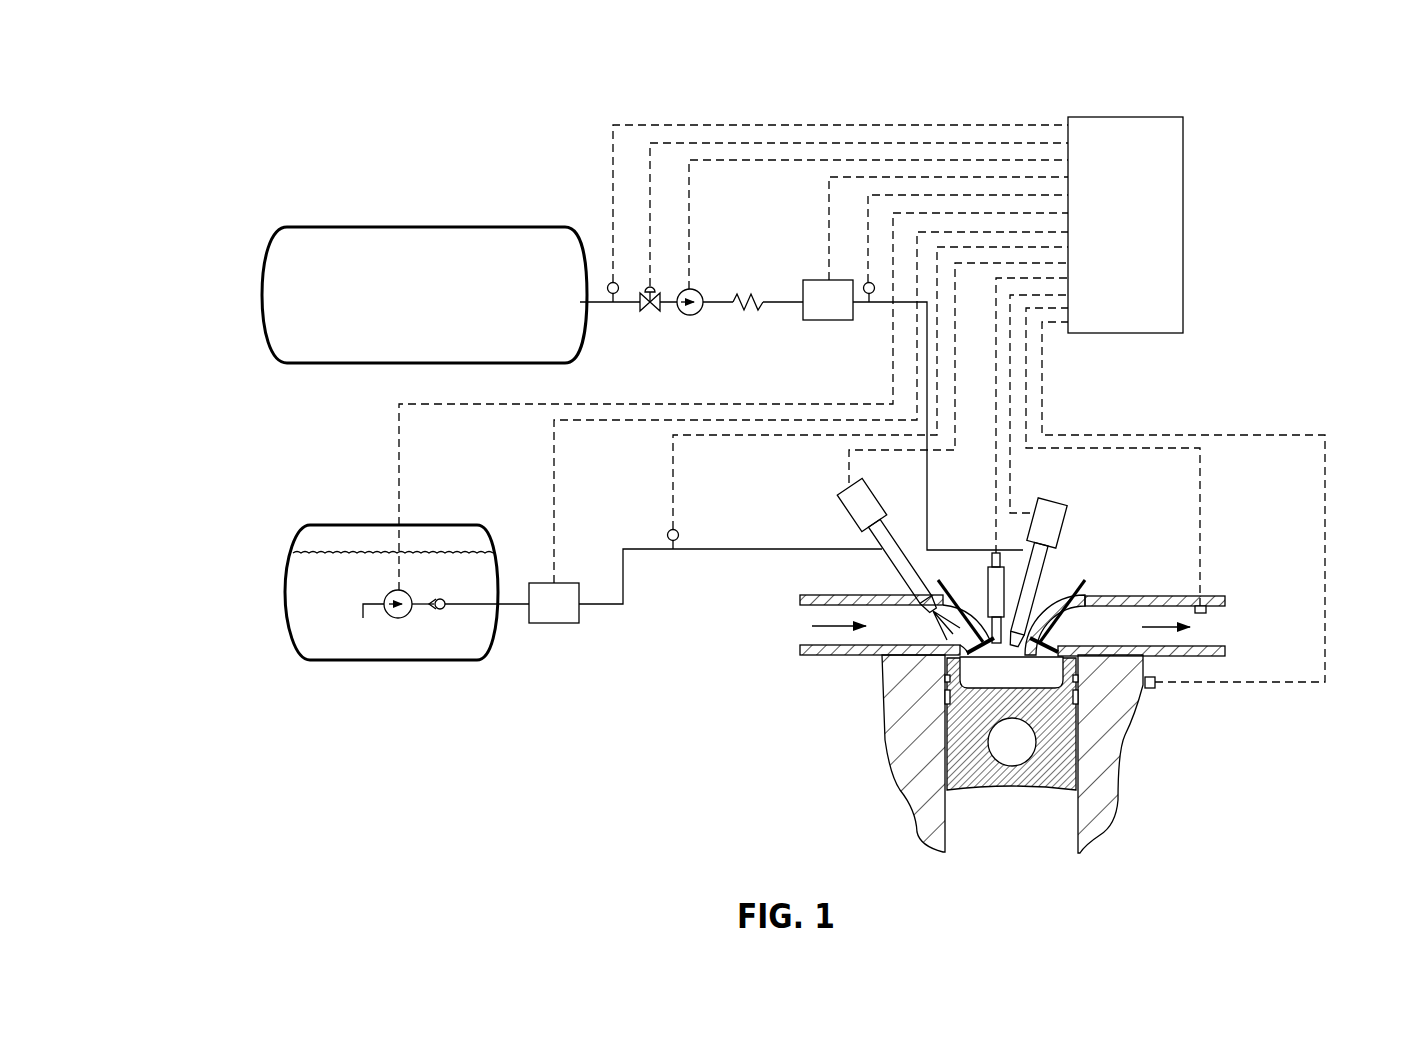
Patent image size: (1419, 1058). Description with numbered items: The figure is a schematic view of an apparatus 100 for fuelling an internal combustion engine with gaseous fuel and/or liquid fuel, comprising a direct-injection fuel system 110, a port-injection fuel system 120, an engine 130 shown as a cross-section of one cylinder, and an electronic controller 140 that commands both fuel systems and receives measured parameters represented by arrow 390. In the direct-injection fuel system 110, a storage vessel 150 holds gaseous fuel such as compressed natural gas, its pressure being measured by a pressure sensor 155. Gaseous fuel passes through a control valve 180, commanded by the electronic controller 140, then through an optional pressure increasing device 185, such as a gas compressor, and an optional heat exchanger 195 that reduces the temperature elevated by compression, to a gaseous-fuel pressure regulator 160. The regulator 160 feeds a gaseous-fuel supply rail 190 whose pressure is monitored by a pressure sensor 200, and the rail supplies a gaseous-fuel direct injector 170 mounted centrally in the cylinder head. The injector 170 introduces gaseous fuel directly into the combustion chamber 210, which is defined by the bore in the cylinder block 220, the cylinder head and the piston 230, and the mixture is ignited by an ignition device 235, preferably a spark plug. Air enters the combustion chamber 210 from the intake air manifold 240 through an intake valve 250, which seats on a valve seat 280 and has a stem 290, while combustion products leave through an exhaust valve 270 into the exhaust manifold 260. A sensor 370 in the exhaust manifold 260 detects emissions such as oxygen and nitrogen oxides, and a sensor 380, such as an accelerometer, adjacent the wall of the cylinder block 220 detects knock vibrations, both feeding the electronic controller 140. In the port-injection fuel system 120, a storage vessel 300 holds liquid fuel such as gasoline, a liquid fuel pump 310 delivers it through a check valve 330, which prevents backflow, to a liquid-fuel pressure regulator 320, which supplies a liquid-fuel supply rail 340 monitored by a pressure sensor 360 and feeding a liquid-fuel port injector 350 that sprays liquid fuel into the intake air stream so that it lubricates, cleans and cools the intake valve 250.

The apparatus 100 is at (342, 173).
The direct-injection fuel system 110 is at (498, 180).
The port-injection fuel system 120 is at (297, 425).
The engine 130 is at (1277, 418).
The electronic controller 140 is at (1142, 236).
The storage vessel 150 is at (425, 267).
The pressure sensor 155 is at (611, 281).
The gaseous-fuel pressure regulator 160 is at (830, 322).
The gaseous-fuel direct injector 170 is at (1047, 518).
The control valve 180 is at (648, 312).
The pressure increasing device 185 is at (688, 288).
The gaseous-fuel supply rail 190 is at (927, 508).
The heat exchanger 195 is at (745, 298).
The pressure sensor 200 is at (868, 281).
The combustion chamber 210 is at (1033, 686).
The cylinder block 220 is at (915, 700).
The piston 230 is at (950, 754).
The ignition device 235 is at (996, 600).
The intake air manifold 240 is at (800, 646).
The intake valve 250 is at (963, 640).
The exhaust manifold 260 is at (1212, 643).
The exhaust valve 270 is at (1057, 640).
The valve seat 280 is at (993, 630).
The stem 290 is at (935, 612).
The storage vessel 300 is at (356, 540).
The liquid fuel pump 310 is at (398, 618).
The liquid-fuel pressure regulator 320 is at (555, 623).
The check valve 330 is at (440, 610).
The liquid-fuel supply rail 340 is at (730, 551).
The liquid-fuel port injector 350 is at (853, 513).
The pressure sensor 360 is at (667, 535).
The sensor 370 is at (1205, 607).
The sensor 380 is at (1152, 690).
The arrow 390 is at (1200, 228).